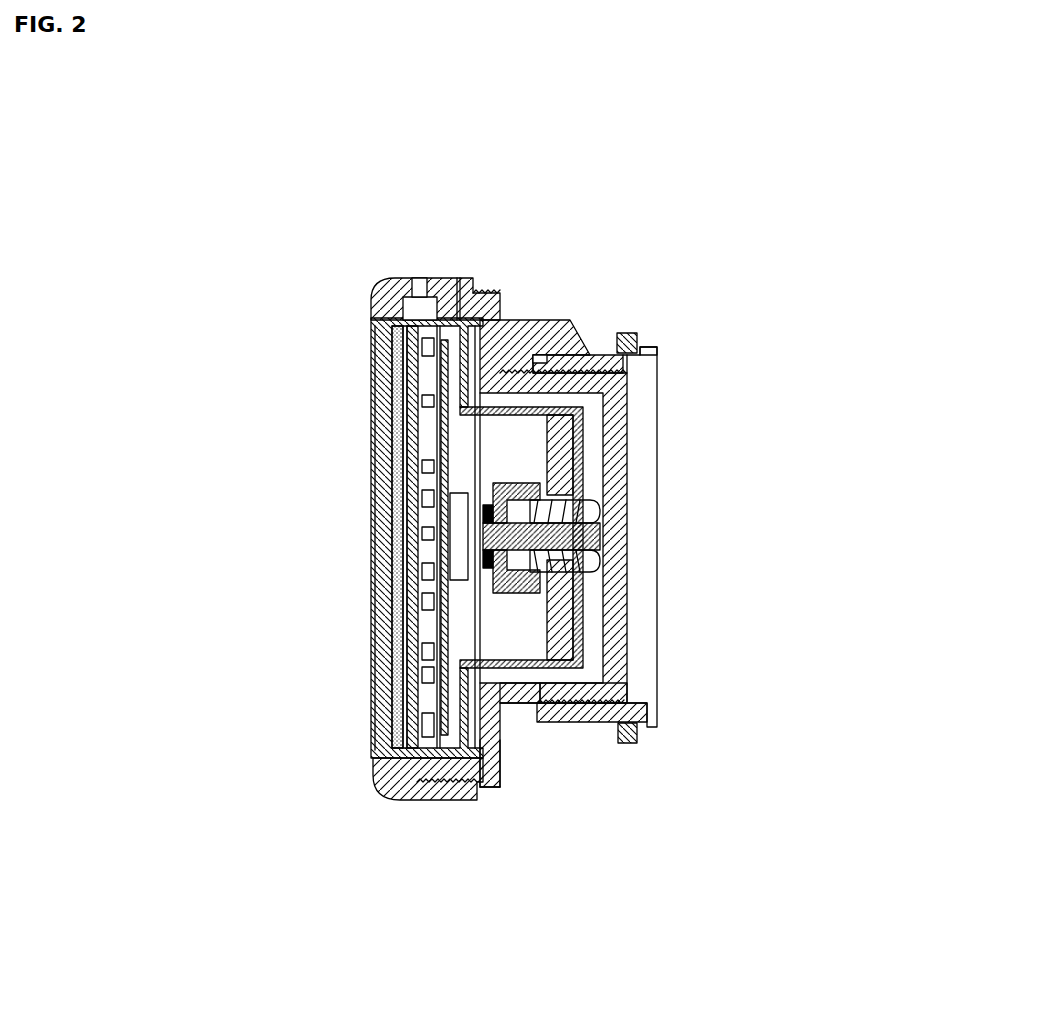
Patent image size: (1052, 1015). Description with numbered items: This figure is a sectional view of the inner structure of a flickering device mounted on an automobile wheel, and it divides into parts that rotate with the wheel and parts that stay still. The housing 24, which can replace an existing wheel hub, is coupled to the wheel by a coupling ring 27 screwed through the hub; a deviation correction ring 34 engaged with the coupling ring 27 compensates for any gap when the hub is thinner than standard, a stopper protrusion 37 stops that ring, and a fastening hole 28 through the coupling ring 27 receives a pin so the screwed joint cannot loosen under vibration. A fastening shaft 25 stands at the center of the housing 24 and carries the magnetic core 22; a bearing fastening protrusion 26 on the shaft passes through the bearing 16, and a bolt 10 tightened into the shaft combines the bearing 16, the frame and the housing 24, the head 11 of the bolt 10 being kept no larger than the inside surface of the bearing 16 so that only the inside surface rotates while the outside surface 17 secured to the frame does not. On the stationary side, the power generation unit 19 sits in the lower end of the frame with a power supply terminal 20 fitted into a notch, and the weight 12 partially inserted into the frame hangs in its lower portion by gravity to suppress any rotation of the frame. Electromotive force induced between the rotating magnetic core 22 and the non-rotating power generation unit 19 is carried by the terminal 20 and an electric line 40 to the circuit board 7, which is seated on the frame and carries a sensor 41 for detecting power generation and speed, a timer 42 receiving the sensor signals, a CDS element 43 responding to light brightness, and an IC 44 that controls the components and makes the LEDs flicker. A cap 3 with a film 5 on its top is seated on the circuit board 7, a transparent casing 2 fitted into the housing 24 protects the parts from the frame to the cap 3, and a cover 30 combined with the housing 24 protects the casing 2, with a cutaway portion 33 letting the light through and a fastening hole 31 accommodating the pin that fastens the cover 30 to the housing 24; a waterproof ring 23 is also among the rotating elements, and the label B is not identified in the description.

The transparent casing 2 is at (383, 383).
The cap 3 is at (433, 583).
The film 5 is at (423, 473).
The circuit board 7 is at (410, 682).
The bolt 10 is at (600, 548).
The head 11 is at (423, 452).
The weight 12 is at (418, 798).
The bearing 16 is at (485, 566).
The outside surface 17 is at (485, 568).
The power generation unit 19 is at (600, 662).
The power supply terminal 20 is at (600, 690).
The magnetic core 22 is at (600, 598).
The waterproof ring 23 is at (490, 782).
The housing 24 is at (505, 320).
The fastening shaft 25 is at (600, 573).
The bearing fastening protrusion 26 is at (563, 712).
The coupling ring 27 is at (652, 448).
The fastening hole 28 is at (570, 352).
The cover 30 is at (386, 288).
The fastening hole 31 is at (457, 277).
The cutaway portion 33 is at (413, 277).
The deviation correction ring 34 is at (637, 333).
The stopper protrusion 37 is at (658, 358).
The electric line 40 is at (520, 705).
The sensor 41 is at (385, 422).
The timer 42 is at (425, 466).
The CDS element 43 is at (383, 565).
The IC 44 is at (437, 677).
The battery B is at (440, 653).